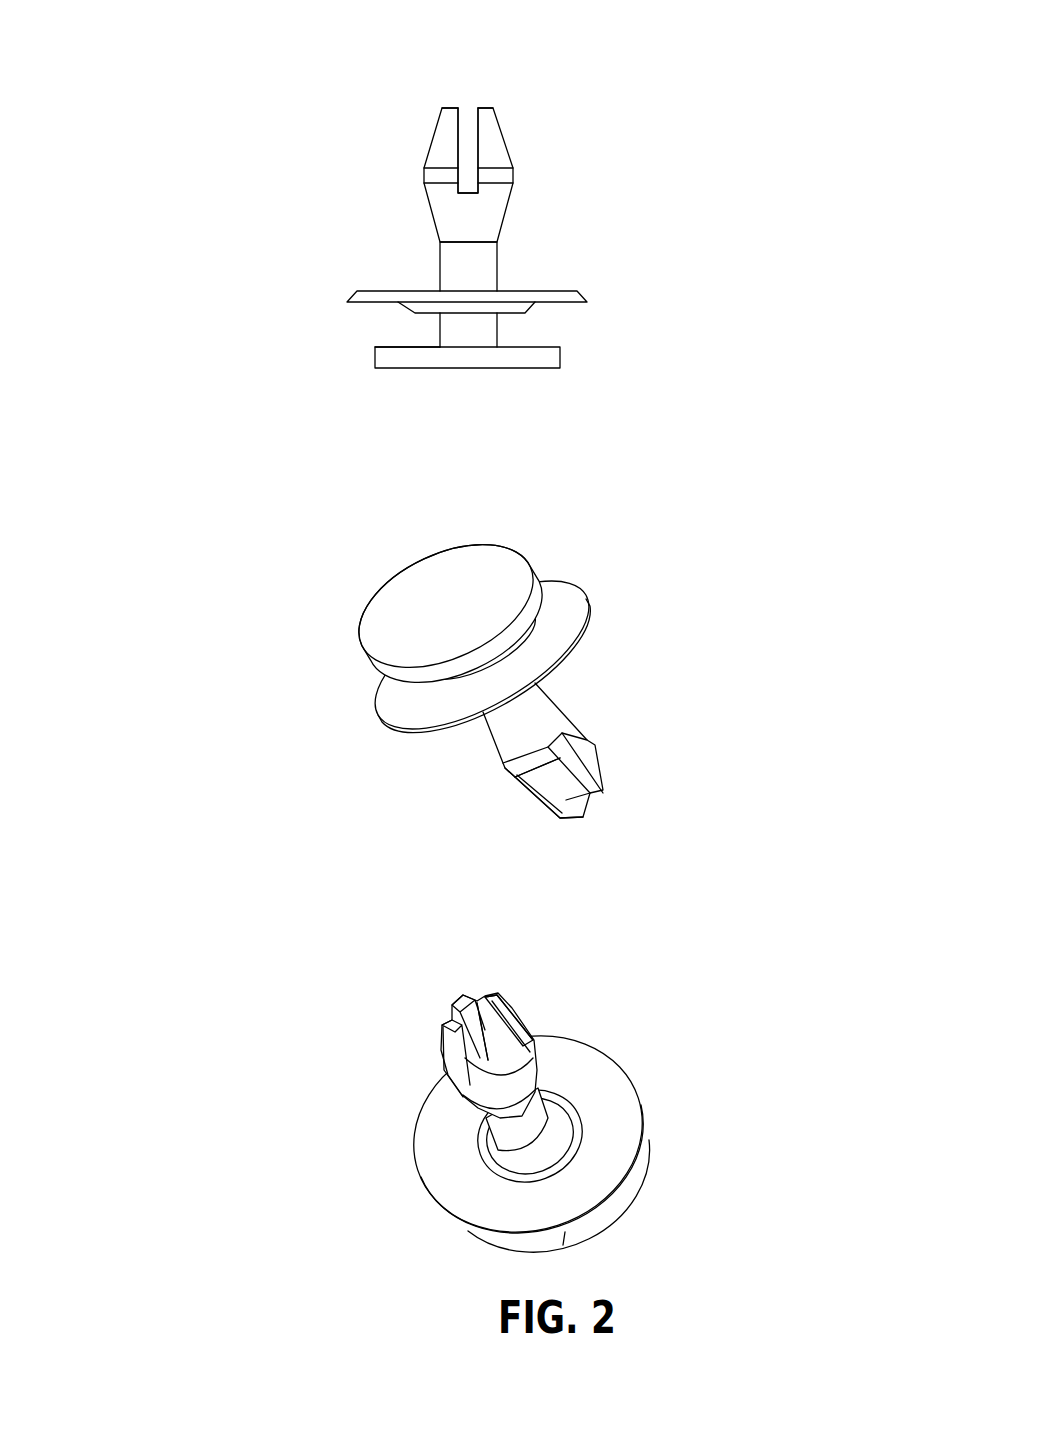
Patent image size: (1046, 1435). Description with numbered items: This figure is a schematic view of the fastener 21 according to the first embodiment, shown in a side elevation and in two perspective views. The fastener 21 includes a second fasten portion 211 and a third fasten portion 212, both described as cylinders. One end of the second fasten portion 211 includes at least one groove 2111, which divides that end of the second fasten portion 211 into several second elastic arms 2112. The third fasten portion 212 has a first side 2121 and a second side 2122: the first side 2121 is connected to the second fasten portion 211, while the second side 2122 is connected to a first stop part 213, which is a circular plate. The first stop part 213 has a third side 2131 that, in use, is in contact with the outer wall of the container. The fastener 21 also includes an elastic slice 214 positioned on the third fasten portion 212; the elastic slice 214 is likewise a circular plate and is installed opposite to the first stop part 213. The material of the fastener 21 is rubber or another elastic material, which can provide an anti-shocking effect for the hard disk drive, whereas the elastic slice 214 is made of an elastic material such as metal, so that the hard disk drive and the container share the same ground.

The fastener 21 is at (88, 119).
The second fasten portion 211 is at (541, 217).
The groove 2111 is at (468, 122).
The second elastic arms 2112 is at (492, 148).
The third fasten portion 212 is at (545, 338).
The first side 2121 is at (453, 272).
The second side 2122 is at (438, 343).
The first stop part 213 is at (490, 363).
The third side 2131 is at (387, 345).
The elastic slice 214 is at (570, 292).